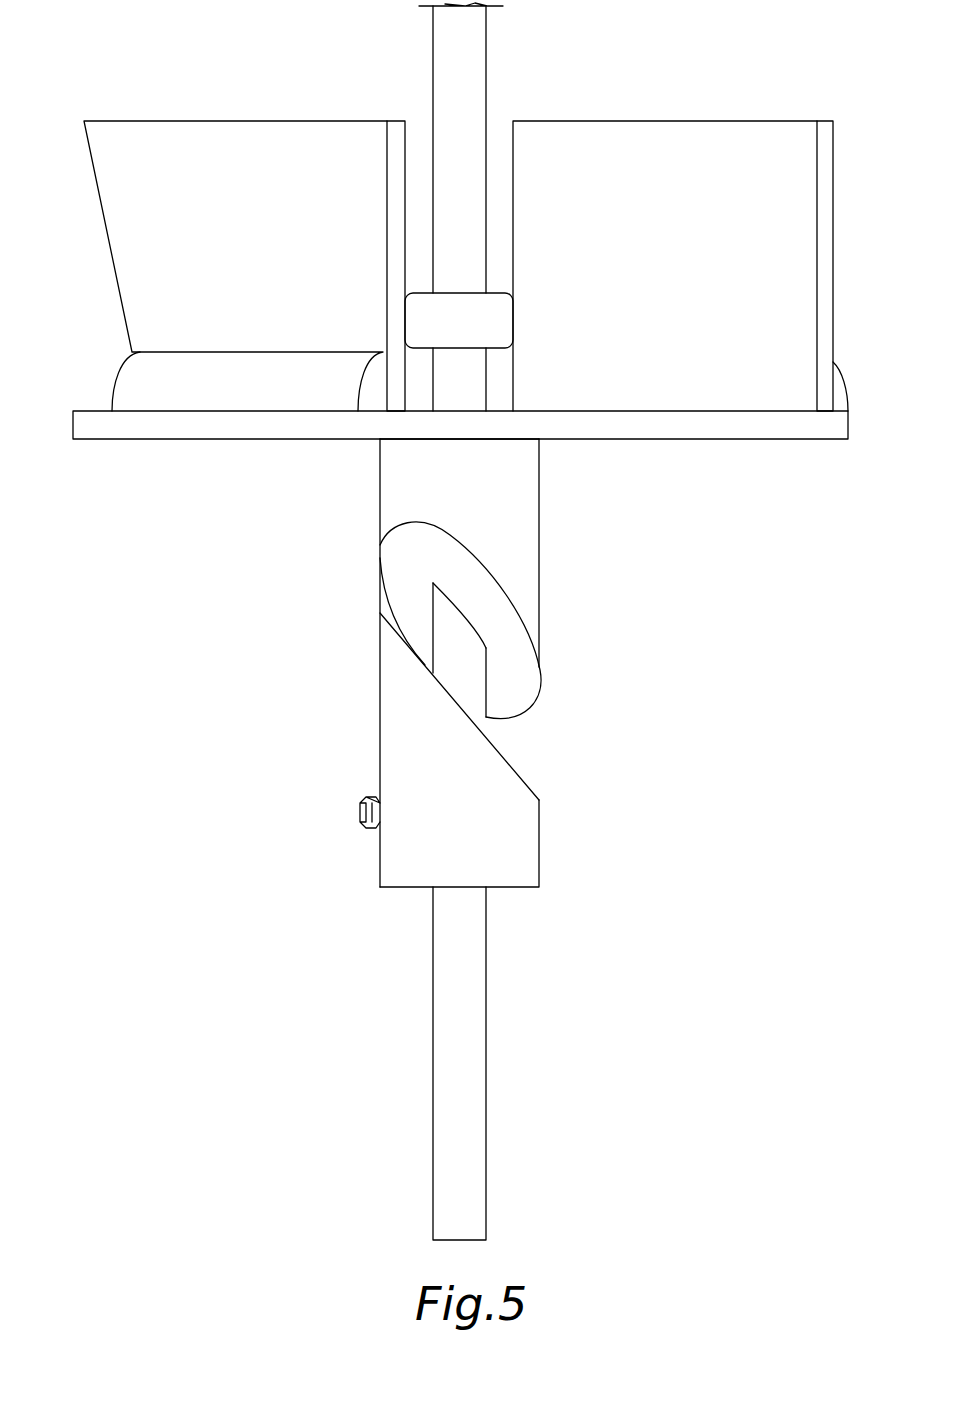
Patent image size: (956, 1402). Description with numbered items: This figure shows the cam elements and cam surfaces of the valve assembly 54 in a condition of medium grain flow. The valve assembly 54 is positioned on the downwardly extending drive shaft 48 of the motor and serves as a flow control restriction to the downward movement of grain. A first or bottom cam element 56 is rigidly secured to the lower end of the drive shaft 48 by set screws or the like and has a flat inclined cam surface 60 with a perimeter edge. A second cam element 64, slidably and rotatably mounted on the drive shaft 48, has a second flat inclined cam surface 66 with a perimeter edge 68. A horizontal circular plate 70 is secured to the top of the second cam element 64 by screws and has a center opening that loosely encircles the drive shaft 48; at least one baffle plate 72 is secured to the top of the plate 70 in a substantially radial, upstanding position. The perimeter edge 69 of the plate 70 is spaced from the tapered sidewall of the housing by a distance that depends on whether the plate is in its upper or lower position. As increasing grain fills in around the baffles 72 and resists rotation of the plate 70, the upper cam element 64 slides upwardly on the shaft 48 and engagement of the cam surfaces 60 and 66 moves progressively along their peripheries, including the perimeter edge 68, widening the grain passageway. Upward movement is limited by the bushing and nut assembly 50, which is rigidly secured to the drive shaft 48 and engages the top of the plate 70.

The drive shaft 48 is at (486, 1085).
The bushing and nut assembly 50 is at (492, 293).
The valve assembly 54 is at (290, 517).
The first or bottom cam element 56 is at (380, 748).
The cam surface 60 is at (507, 758).
The second cam element 64 is at (387, 482).
The second cam surface 66 is at (392, 555).
The perimeter edge 68 is at (510, 600).
The perimeter edge of plate 69 is at (694, 423).
The horizontal circular plate 70 is at (607, 439).
The baffle plate 72 is at (293, 121).